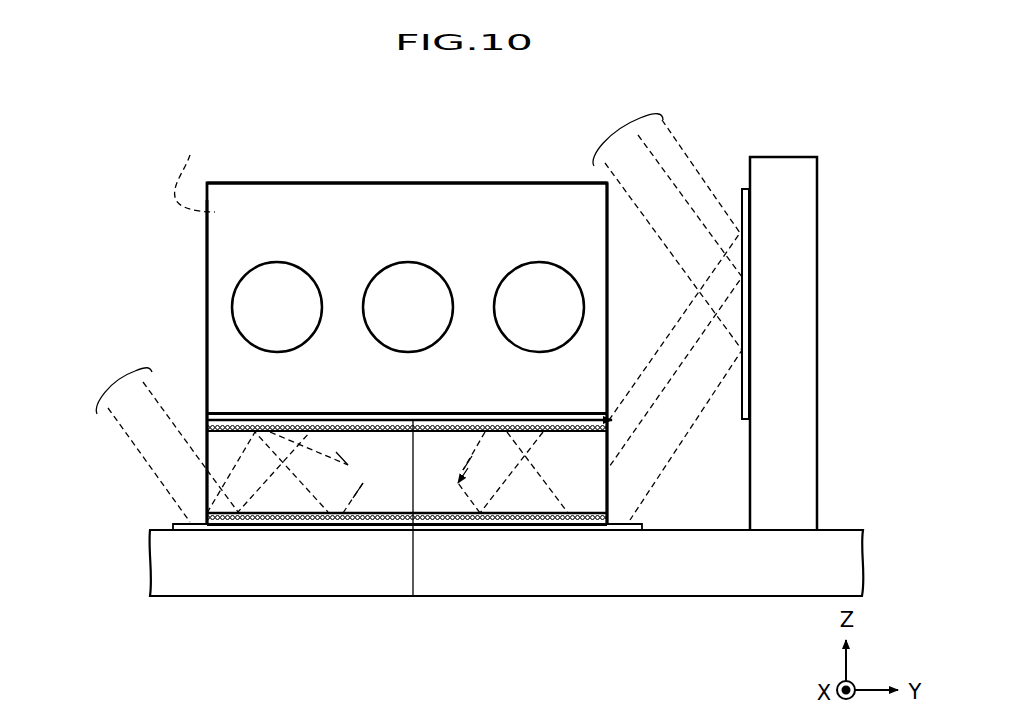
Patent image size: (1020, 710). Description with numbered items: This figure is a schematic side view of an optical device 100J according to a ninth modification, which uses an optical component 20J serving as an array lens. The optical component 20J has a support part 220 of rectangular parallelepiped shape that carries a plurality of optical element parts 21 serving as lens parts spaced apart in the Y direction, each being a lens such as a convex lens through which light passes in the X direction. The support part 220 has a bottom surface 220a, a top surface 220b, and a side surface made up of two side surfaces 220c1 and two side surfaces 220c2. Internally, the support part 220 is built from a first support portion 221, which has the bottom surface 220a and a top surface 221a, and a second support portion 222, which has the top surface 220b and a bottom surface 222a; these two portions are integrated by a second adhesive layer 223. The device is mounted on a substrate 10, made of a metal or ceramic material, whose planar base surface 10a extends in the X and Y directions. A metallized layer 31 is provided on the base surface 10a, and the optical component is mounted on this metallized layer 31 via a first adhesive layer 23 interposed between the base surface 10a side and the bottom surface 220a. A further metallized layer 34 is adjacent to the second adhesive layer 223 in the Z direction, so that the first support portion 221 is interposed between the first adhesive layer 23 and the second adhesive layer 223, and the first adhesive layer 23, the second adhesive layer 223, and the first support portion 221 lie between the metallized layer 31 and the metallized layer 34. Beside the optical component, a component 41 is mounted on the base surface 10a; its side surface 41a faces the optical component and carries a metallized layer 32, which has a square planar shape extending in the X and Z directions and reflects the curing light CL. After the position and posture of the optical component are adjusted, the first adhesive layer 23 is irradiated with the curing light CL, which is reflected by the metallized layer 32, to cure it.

The optical device 100J is at (355, 158).
The optical component 20J is at (204, 242).
The optical element part 21 is at (290, 292).
The top surface 220b is at (558, 183).
The side surface 220c1 is at (225, 192).
The side surface 220c2 is at (207, 268).
The support part 220 is at (62, 437).
The second support portion 222 is at (220, 392).
The second adhesive layer 223 is at (220, 427).
The first support portion 221 is at (220, 462).
The top surface 221a is at (607, 405).
The bottom surface 222a is at (606, 432).
The bottom surface 220a is at (380, 524).
The curing light CL is at (122, 376).
The component 41 is at (822, 176).
The side surface 41a is at (749, 168).
The metallized layer 32 is at (749, 288).
The substrate 10 is at (870, 550).
The base surface 10a is at (718, 530).
The metallized layer 31 is at (211, 528).
The first adhesive layer 23 is at (271, 527).
The metallized layer 34 is at (413, 597).